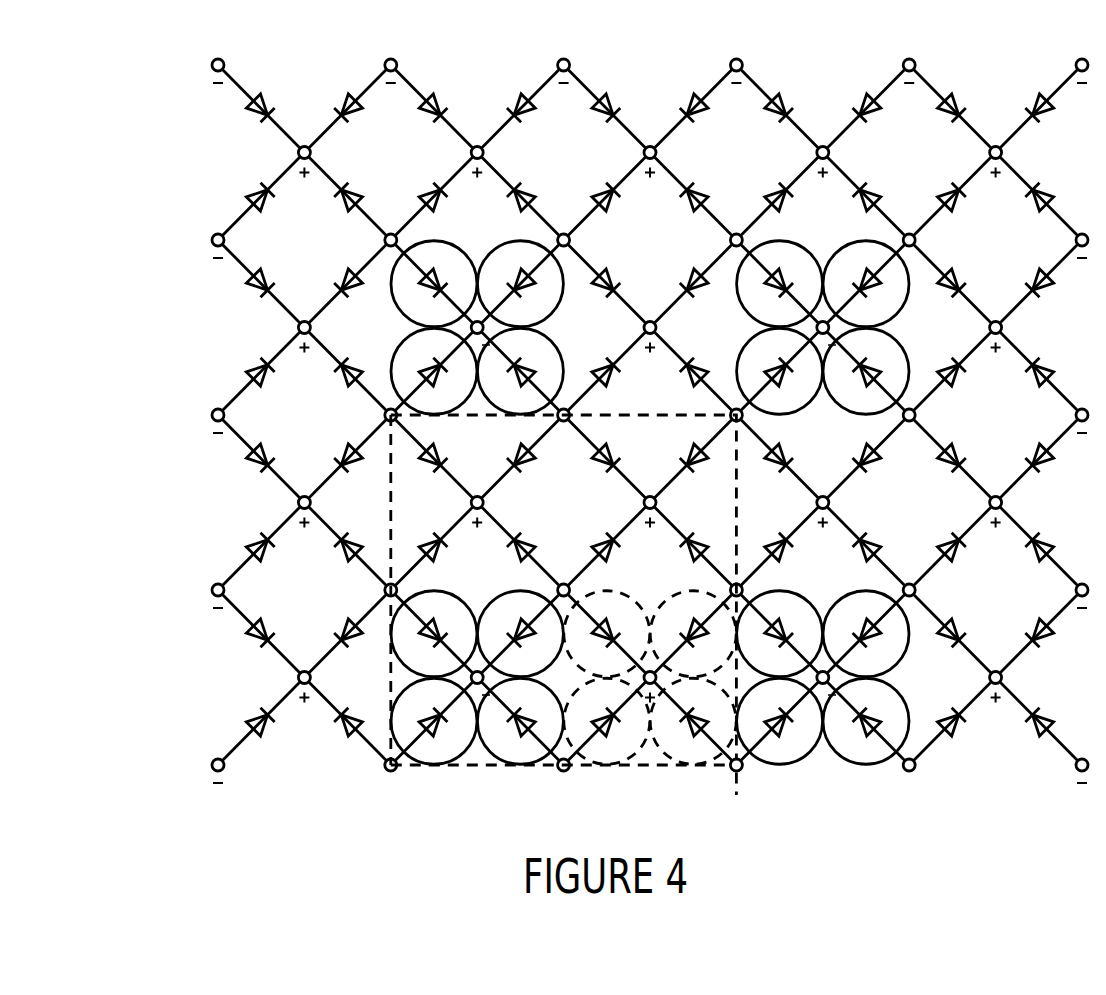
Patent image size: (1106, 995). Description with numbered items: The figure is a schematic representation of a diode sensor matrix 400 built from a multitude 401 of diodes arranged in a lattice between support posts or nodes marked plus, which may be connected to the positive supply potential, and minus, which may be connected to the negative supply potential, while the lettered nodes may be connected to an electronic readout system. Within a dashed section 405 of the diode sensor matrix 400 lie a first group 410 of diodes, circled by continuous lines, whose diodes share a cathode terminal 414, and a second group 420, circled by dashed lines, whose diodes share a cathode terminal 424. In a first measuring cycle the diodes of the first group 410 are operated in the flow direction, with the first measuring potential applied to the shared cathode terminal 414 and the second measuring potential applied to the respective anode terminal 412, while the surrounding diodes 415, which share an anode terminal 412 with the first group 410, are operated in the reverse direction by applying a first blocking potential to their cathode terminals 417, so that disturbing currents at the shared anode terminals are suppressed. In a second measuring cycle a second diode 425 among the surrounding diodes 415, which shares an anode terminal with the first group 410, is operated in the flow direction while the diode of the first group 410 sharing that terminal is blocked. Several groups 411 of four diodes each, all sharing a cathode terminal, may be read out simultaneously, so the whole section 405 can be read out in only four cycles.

The diode sensor matrix 400 is at (128, 32).
The multitude of diodes 401 is at (907, 168).
The section of the diode sensor matrix 405 is at (740, 468).
The first group of diodes 410 is at (443, 770).
The groups of four diodes 411 is at (918, 267).
The anode terminal 412 is at (383, 590).
The shared cathode terminal 414 is at (468, 678).
The surrounding diodes 415 is at (340, 556).
The cathode terminals of the surrounding diodes 417 is at (292, 505).
The second group of diodes 420 is at (712, 783).
The shared cathode terminal of the second group 424 is at (638, 676).
The second diode 425 is at (622, 762).